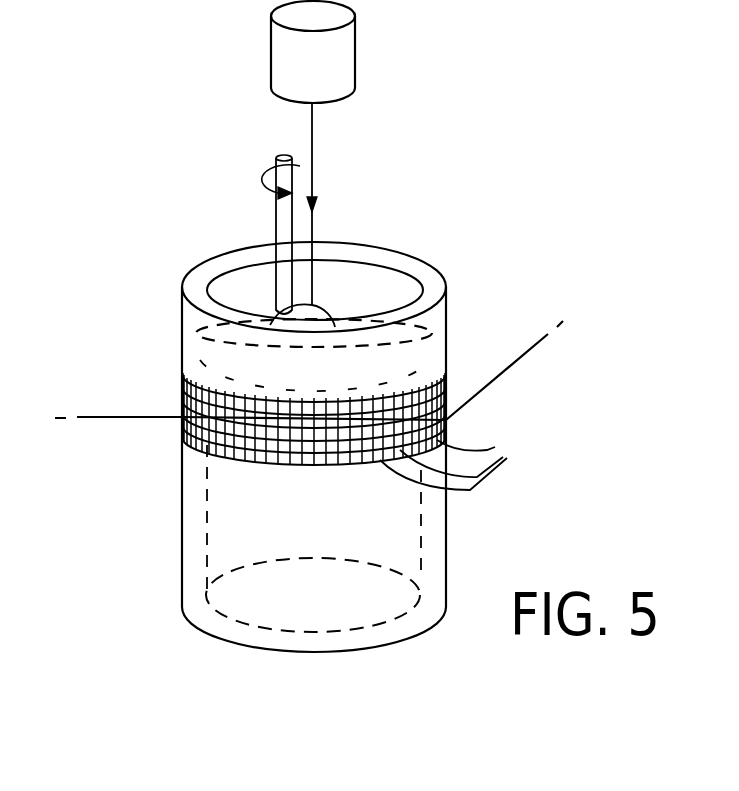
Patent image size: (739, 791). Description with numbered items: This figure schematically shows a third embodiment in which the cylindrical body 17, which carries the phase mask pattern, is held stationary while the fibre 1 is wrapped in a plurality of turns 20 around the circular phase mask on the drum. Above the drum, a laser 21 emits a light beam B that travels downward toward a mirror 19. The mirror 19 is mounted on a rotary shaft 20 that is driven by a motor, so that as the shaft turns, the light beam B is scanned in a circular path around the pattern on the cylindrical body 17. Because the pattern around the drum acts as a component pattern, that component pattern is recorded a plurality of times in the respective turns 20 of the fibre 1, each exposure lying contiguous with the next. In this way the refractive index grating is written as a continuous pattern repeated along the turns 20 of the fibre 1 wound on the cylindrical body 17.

The fibre 1 is at (128, 420).
The cylindrical body 17 is at (446, 527).
The mirror 19 is at (318, 307).
The turns 20 is at (276, 222).
The laser 21 is at (355, 50).
The light beam B is at (312, 150).